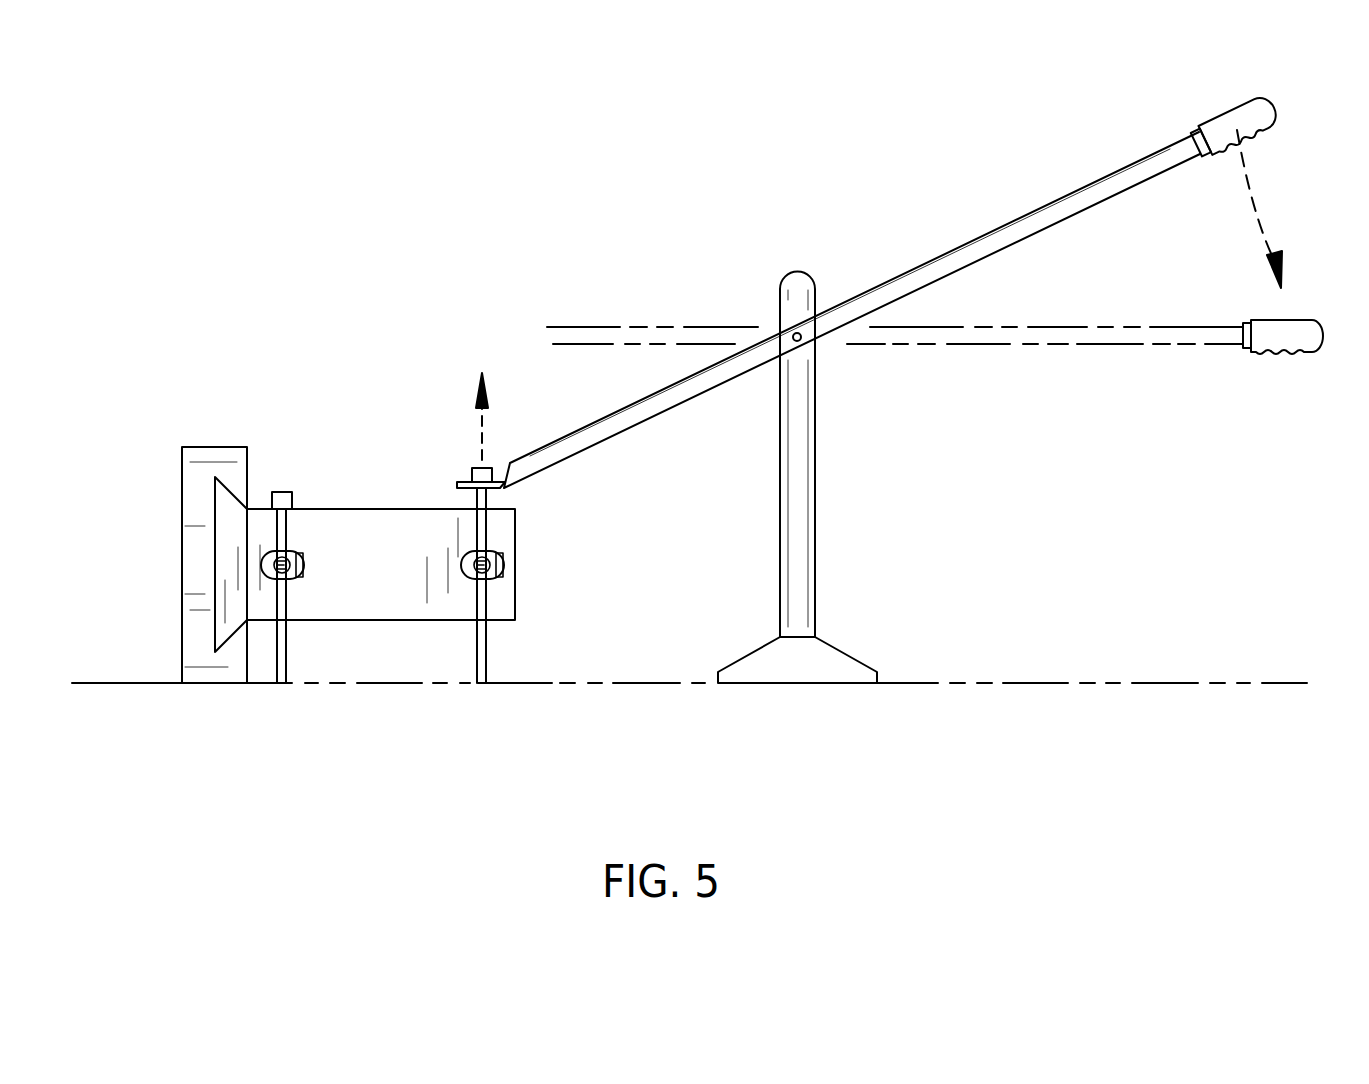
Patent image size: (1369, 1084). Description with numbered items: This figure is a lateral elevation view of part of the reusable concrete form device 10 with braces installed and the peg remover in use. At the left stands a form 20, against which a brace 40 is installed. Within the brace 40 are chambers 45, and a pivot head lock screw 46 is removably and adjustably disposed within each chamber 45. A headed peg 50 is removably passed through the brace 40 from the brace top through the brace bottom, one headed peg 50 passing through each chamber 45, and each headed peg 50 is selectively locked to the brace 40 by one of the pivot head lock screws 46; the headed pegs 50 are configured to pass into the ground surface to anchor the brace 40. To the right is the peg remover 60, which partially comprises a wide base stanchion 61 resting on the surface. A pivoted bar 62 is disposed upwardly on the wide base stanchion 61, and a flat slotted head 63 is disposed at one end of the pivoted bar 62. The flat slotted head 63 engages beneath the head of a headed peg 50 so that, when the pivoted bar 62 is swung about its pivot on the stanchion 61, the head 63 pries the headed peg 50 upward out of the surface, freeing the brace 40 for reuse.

The reusable concrete form device 10 is at (507, 265).
The form 20 is at (203, 462).
The brace 40 is at (358, 542).
The chamber 45 is at (460, 577).
The pivot head lock screw 46 is at (498, 565).
The headed peg 50 is at (278, 492).
The peg remover 60 is at (813, 407).
The wide base stanchion 61 is at (807, 502).
The pivoted bar 62 is at (968, 242).
The flat slotted head 63 is at (458, 485).